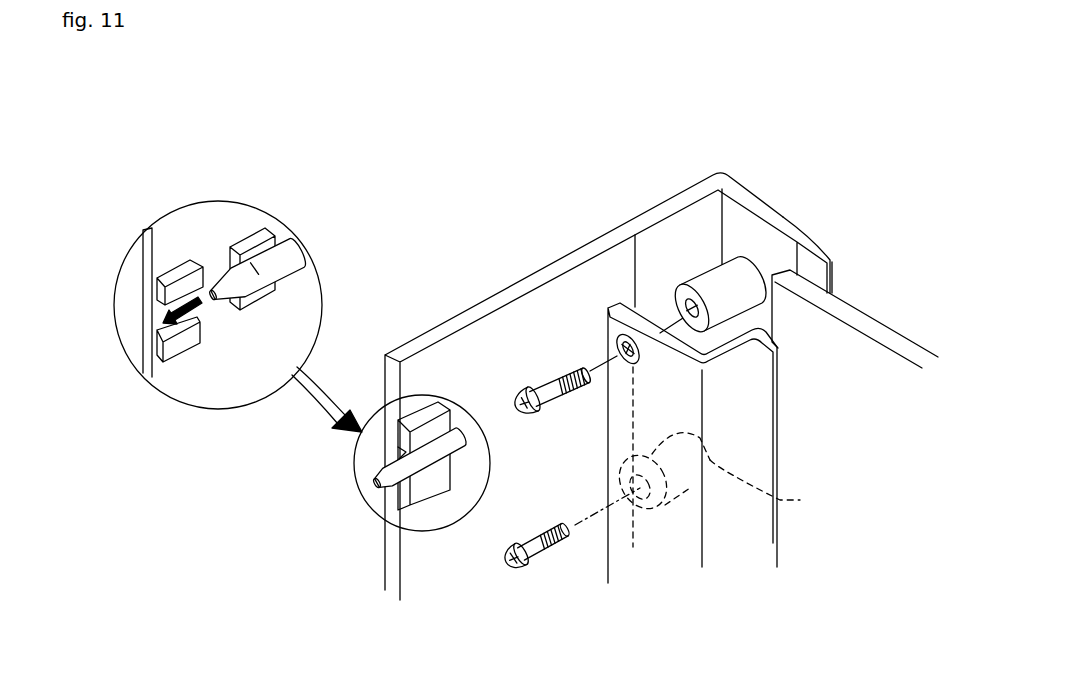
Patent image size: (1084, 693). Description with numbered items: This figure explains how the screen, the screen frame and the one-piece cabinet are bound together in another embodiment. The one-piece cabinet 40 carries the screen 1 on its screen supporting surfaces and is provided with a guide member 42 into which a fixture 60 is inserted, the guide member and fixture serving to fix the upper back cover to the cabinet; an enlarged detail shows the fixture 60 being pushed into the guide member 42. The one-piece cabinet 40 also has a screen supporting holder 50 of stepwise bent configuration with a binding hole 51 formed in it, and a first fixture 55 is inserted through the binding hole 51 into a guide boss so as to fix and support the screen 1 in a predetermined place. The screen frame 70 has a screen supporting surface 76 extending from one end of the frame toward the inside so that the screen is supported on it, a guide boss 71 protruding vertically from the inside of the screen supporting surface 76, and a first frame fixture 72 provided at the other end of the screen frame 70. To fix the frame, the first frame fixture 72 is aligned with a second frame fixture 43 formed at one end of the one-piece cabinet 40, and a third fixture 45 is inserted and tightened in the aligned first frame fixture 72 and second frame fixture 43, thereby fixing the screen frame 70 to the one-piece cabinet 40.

The screen 1 is at (873, 323).
The one-piece cabinet 40 is at (434, 331).
The guide member 42 is at (151, 277).
The second frame fixture 43 is at (600, 481).
The third fixture 45 is at (506, 549).
The screen supporting holder 50 is at (606, 436).
The binding hole 51 is at (621, 345).
The first fixture 55 is at (517, 382).
The fixture 60 is at (276, 243).
The screen frame 70 is at (638, 222).
The guide boss 71 is at (704, 290).
The first frame fixture 72 is at (800, 500).
The screen supporting surface 76 is at (783, 217).